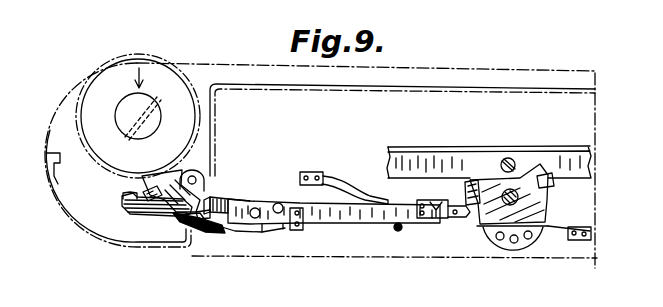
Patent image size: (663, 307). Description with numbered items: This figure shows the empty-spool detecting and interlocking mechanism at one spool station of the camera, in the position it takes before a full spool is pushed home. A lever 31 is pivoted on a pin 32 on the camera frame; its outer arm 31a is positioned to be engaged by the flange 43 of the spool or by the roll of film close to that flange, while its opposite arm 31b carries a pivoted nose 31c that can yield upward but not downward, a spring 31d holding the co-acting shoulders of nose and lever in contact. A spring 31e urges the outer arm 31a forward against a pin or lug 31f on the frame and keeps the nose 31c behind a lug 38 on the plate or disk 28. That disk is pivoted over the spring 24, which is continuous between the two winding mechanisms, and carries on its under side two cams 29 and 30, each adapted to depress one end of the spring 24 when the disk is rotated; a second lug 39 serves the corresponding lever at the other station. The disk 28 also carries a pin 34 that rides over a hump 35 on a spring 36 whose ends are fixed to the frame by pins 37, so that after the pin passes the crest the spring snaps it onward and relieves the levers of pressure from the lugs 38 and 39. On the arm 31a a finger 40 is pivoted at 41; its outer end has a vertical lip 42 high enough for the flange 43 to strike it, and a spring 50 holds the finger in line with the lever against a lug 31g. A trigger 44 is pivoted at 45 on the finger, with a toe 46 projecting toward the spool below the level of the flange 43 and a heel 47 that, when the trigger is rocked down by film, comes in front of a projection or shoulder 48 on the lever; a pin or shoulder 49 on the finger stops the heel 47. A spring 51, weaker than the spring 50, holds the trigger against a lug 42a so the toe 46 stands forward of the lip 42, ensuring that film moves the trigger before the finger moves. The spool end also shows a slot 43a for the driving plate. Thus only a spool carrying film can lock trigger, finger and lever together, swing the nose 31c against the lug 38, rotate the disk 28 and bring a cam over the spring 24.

The spring 24 is at (431, 159).
The plate or disk 28 is at (533, 210).
The cam 29 is at (489, 183).
The cam 30 is at (517, 172).
The lever 31 is at (357, 223).
The arm 31a is at (263, 224).
The arm 31b is at (413, 222).
The pivoted nose 31c is at (458, 222).
The spring 31d is at (438, 207).
The spring 31e is at (337, 190).
The pin or lug 31f is at (397, 230).
The lug 31g is at (236, 198).
The pin 32 is at (278, 203).
The pin 34 is at (523, 239).
The hump 35 is at (513, 243).
The spring 36 is at (553, 231).
The pins 37 is at (587, 236).
The lug 38 is at (472, 220).
The lug 39 is at (544, 185).
The finger 40 is at (146, 226).
The pivot 41 is at (255, 219).
The vertical lip 42 is at (128, 193).
The lug 42a is at (162, 192).
The flange 43 is at (143, 60).
The slot 43a is at (133, 118).
The trigger 44 is at (178, 216).
The pivot 45 is at (193, 174).
The toe 46 is at (157, 175).
The heel 47 is at (203, 218).
The projection or shoulder 48 is at (240, 188).
The pin or shoulder 49 is at (210, 206).
The spring 50 is at (277, 229).
The spring 51 is at (183, 221).